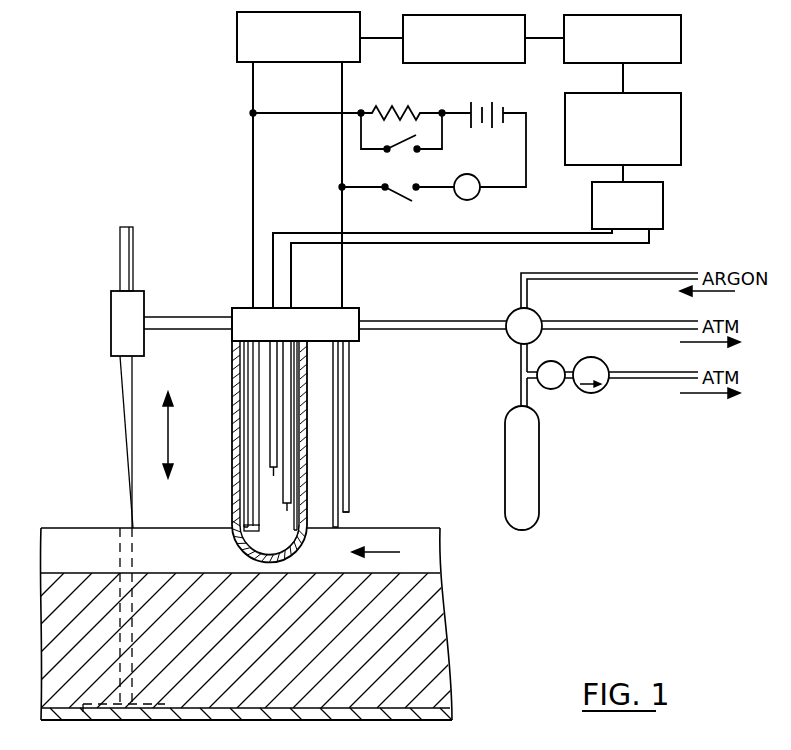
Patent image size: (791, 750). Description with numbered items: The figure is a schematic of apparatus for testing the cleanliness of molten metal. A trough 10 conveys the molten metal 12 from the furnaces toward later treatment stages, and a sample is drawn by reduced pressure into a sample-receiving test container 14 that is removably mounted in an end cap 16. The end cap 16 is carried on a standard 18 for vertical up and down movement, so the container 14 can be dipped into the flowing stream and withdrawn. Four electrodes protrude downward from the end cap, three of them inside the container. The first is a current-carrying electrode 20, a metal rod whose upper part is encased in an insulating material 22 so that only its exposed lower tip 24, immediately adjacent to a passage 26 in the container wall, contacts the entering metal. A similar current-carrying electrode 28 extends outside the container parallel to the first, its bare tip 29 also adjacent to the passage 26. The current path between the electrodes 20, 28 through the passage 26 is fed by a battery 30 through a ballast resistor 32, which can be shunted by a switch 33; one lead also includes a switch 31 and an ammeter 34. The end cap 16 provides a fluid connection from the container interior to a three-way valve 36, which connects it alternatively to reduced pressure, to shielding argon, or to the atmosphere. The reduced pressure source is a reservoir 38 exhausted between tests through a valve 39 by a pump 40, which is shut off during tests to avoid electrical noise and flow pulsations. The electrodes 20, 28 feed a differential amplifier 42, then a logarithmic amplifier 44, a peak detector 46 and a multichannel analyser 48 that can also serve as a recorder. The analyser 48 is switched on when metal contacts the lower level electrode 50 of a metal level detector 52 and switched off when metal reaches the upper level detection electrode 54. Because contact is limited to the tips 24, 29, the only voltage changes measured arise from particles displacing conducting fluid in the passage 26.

The trough 10 is at (271, 624).
The molten metal 12 is at (428, 620).
The sample-receiving test container 14 is at (232, 445).
The end cap 16 is at (243, 308).
The standard 18 is at (134, 275).
The current-carrying electrode 20 is at (252, 372).
The insulating material 22 is at (247, 399).
The exposed lower tip 24 is at (250, 527).
The passage 26 is at (305, 525).
The current-carrying electrode 28 is at (343, 400).
The tip 29 is at (345, 518).
The battery 30 is at (478, 85).
The switch 31 is at (390, 197).
The ballast resistor 32 is at (416, 104).
The switch 33 is at (402, 150).
The ammeter 34 is at (477, 197).
The three-way valve 36 is at (512, 311).
The reservoir 38 is at (540, 477).
The valve 39 is at (552, 389).
The pump 40 is at (603, 389).
The differential amplifier 42 is at (316, 64).
The logarithmic amplifier 44 is at (467, 64).
The peak detector 46 is at (681, 52).
The multichannel analyser 48 is at (681, 135).
The lower level electrode 50 is at (293, 487).
The metal level detector 52 is at (663, 210).
The upper level detection electrode 54 is at (273, 417).